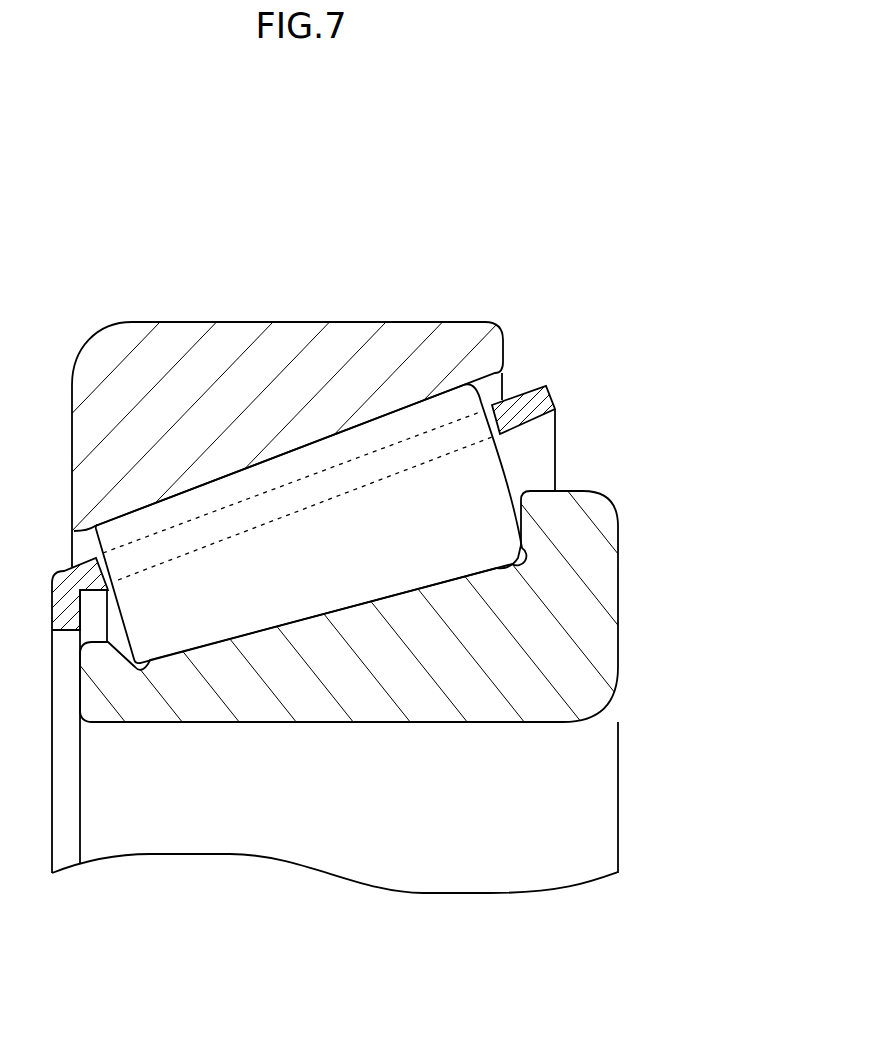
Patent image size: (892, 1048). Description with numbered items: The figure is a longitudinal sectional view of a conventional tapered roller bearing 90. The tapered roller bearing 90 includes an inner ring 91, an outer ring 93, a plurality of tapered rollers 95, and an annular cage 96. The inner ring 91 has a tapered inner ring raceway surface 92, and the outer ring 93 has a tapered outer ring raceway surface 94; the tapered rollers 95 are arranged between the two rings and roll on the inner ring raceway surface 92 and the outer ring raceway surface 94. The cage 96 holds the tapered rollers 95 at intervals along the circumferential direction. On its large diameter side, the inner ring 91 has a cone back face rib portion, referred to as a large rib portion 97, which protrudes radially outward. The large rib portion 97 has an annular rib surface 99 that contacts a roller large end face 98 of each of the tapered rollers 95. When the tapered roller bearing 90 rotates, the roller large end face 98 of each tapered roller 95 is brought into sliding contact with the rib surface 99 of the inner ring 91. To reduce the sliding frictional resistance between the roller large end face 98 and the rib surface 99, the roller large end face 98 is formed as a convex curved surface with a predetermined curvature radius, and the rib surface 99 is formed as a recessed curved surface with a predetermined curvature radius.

The tapered roller bearing 90 is at (446, 478).
The inner ring 91 is at (620, 610).
The inner ring raceway surface 92 is at (273, 625).
The outer ring 93 is at (238, 320).
The outer ring raceway surface 94 is at (318, 443).
The tapered rollers 95 is at (368, 578).
The cage 96 is at (568, 286).
The large rib portion 97 is at (570, 523).
The roller large end face 98 is at (508, 468).
The rib surface 99 is at (497, 567).